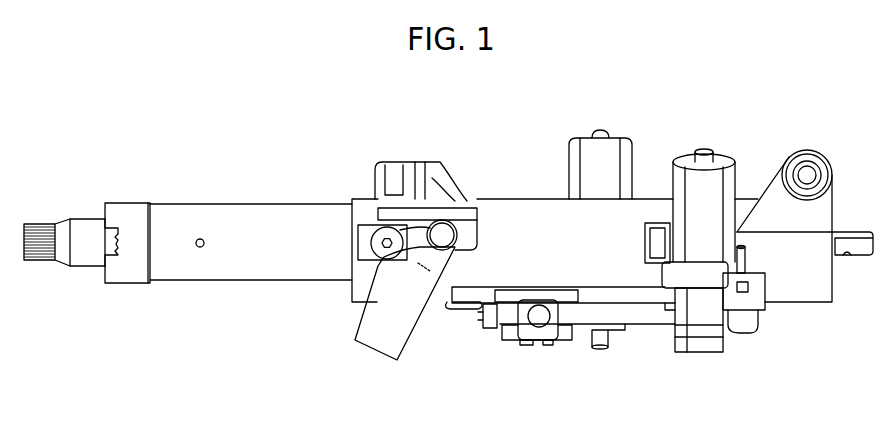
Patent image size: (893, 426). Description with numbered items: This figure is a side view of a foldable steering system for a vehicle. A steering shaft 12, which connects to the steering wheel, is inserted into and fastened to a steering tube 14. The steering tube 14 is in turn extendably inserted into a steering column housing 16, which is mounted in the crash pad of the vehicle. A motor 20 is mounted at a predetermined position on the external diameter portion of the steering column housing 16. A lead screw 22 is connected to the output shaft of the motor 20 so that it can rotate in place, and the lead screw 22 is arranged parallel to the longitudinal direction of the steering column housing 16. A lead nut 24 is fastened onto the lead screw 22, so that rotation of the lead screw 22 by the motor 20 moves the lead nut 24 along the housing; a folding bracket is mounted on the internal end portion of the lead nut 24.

The steering shaft 12 is at (85, 226).
The steering tube 14 is at (198, 207).
The steering column housing 16 is at (508, 199).
The motor 20 is at (712, 178).
The lead screw 22 is at (650, 320).
The lead nut 24 is at (528, 333).